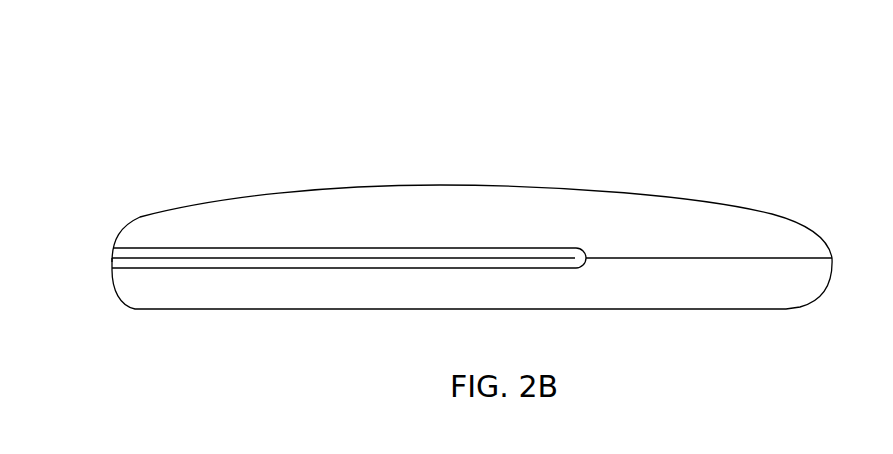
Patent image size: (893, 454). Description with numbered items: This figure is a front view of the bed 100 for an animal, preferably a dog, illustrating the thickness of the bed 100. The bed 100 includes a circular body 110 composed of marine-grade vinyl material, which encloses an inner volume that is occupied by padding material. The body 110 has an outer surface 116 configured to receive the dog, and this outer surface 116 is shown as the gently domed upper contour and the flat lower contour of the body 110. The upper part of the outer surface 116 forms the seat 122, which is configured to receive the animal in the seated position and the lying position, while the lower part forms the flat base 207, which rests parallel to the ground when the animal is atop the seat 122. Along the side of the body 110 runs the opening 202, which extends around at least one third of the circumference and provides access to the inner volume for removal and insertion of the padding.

The bed 100 is at (740, 86).
The circular body 110 is at (197, 179).
The seat 122 is at (317, 204).
The outer surface 116 is at (412, 196).
The opening 202 is at (164, 268).
The flat base 207 is at (619, 326).